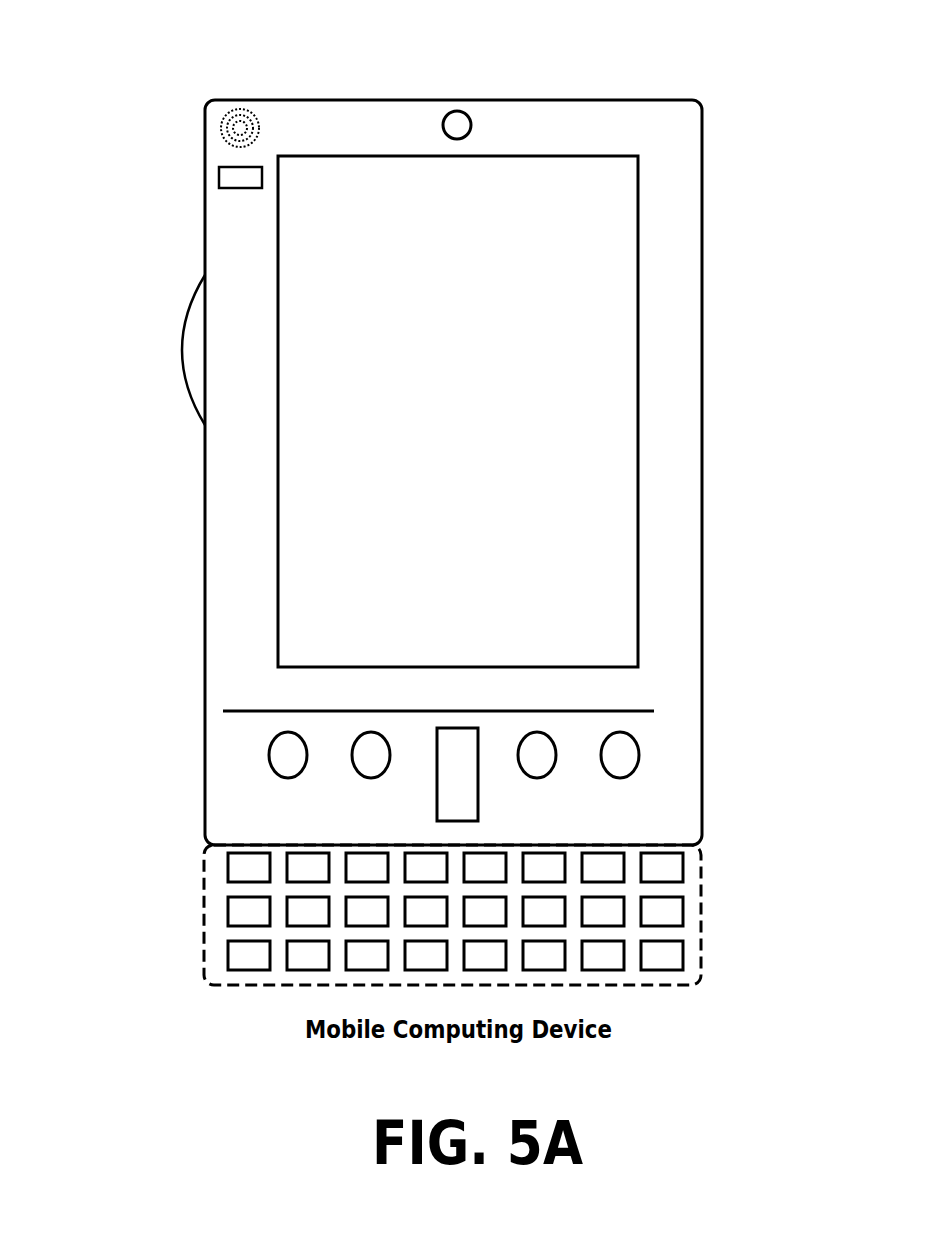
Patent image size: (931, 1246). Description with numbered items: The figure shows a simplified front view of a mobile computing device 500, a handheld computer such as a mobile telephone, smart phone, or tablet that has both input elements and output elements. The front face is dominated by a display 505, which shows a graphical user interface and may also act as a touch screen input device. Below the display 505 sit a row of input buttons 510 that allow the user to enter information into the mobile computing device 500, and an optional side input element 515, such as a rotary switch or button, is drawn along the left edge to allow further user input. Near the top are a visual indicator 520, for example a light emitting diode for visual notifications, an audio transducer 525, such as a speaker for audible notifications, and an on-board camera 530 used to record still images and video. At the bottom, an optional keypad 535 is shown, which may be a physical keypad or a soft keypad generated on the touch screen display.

The mobile computing device 500 is at (690, 118).
The display 505 is at (390, 579).
The input buttons 510 is at (457, 781).
The side input element 515 is at (195, 350).
The visual indicator 520 is at (218, 182).
The audio transducer 525 is at (222, 128).
The on-board camera 530 is at (470, 124).
The keypad 535 is at (213, 960).